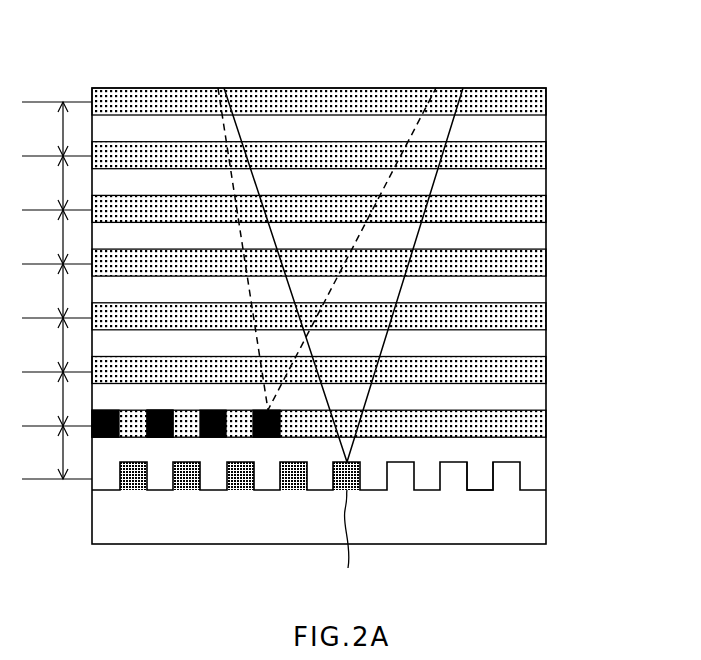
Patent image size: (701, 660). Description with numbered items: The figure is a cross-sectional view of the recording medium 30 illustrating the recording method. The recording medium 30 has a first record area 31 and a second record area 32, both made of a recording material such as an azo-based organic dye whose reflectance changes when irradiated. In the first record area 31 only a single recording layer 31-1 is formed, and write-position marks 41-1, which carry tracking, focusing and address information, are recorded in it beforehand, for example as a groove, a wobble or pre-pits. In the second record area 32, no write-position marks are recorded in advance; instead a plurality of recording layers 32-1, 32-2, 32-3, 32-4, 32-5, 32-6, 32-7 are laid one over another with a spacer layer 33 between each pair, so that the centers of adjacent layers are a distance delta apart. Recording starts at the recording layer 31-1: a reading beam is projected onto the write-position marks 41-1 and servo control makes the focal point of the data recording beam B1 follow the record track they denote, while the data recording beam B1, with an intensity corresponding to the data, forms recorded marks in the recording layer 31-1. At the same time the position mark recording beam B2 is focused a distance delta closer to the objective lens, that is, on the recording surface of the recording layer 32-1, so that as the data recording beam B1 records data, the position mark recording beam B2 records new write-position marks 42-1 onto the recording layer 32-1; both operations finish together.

The recording medium 30 is at (99, 51).
The first record area 31 is at (633, 438).
The recording layer 31-1 is at (540, 477).
The second record area 32 is at (633, 88).
The recording layer 32-1 is at (533, 421).
The recording layer 32-2 is at (533, 369).
The recording layer 32-3 is at (533, 318).
The recording layer 32-4 is at (533, 264).
The recording layer 32-5 is at (533, 210).
The recording layer 32-6 is at (533, 156).
The recording layer 32-7 is at (533, 102).
The spacer layer 33 is at (531, 129).
The write-position marks 41-1 is at (478, 490).
The write-position marks 42-1 is at (161, 438).
The data recording beam B1 is at (455, 128).
The position mark recording beam B2 is at (416, 128).